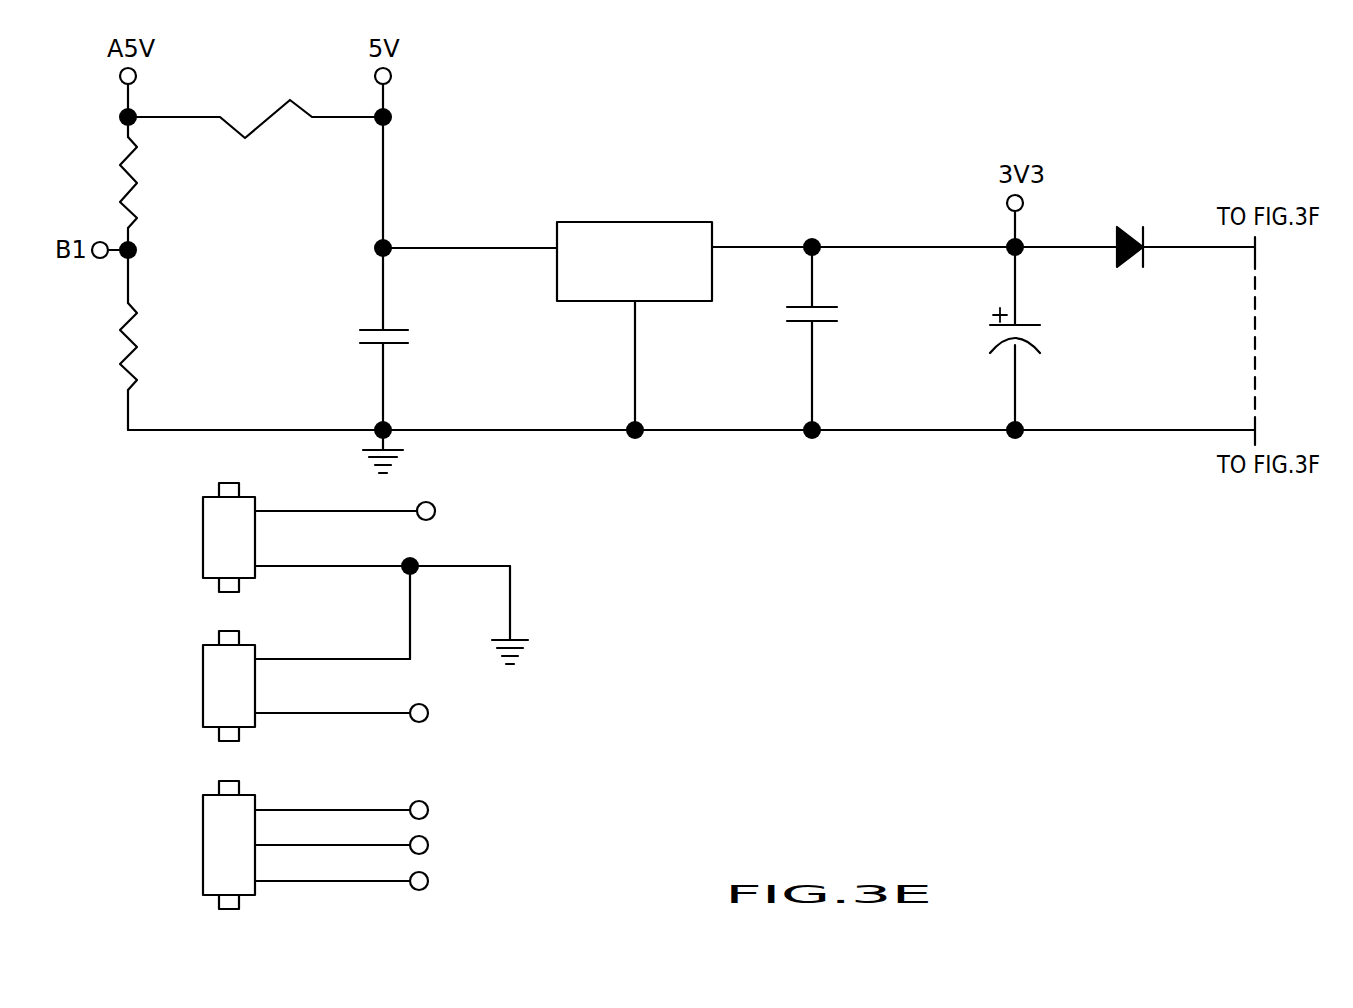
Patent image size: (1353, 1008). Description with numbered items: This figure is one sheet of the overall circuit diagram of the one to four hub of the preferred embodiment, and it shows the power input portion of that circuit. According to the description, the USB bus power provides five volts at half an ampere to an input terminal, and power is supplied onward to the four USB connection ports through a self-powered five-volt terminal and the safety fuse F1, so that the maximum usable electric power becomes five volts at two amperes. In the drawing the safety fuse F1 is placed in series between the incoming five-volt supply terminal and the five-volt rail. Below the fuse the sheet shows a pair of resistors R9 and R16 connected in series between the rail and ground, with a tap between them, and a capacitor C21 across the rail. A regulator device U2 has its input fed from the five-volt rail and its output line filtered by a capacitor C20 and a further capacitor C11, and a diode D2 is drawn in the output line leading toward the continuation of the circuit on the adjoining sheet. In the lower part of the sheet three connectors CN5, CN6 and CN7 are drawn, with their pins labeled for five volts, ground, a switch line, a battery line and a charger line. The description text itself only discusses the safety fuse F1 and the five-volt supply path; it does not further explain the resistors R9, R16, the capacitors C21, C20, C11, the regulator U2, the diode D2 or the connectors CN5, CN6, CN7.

The safety fuse F1 is at (255, 90).
The resistor 10K R9 is at (158, 182).
The resistor 15K R16 is at (159, 345).
The capacitor 104Z C21 is at (350, 328).
The voltage regulator GP1117-SOT223 U2 is at (646, 254).
The capacitor 104Z C20 is at (782, 327).
The electrolytic capacitor CE22U 16V C11 is at (974, 340).
The diode 1N4148 D2 is at (1139, 216).
The connector CN5 is at (365, 561).
The connector CN6 is at (339, 653).
The connector CN7 is at (366, 831).